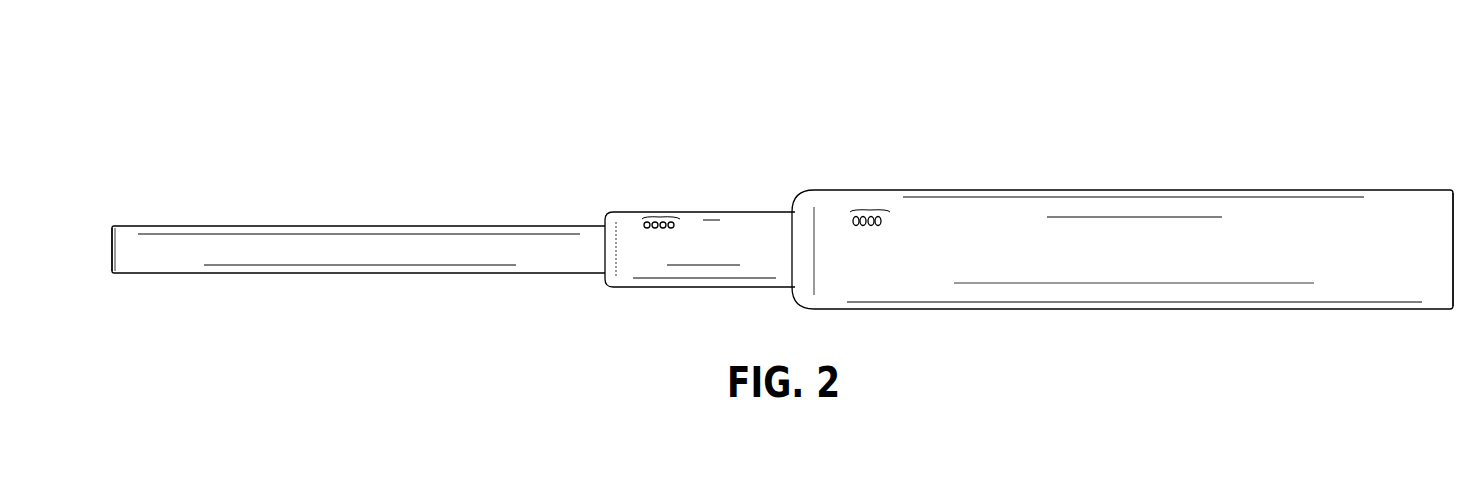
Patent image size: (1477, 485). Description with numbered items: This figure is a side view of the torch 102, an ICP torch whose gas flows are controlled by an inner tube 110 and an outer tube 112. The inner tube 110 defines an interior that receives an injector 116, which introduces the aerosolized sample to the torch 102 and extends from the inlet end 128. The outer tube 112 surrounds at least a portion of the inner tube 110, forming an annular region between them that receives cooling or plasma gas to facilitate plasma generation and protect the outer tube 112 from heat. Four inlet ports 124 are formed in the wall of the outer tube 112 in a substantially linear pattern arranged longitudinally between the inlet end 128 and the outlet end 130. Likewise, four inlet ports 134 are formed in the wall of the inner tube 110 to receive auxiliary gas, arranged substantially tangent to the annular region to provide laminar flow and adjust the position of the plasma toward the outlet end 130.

The torch 102 is at (1158, 78).
The inner tube 110 is at (757, 228).
The outer tube 112 is at (1280, 210).
The injector 116 is at (371, 246).
The inlet ports 124 is at (871, 210).
The inlet end 128 is at (110, 227).
The outlet end 130 is at (1455, 190).
The inlet ports 134 is at (660, 213).